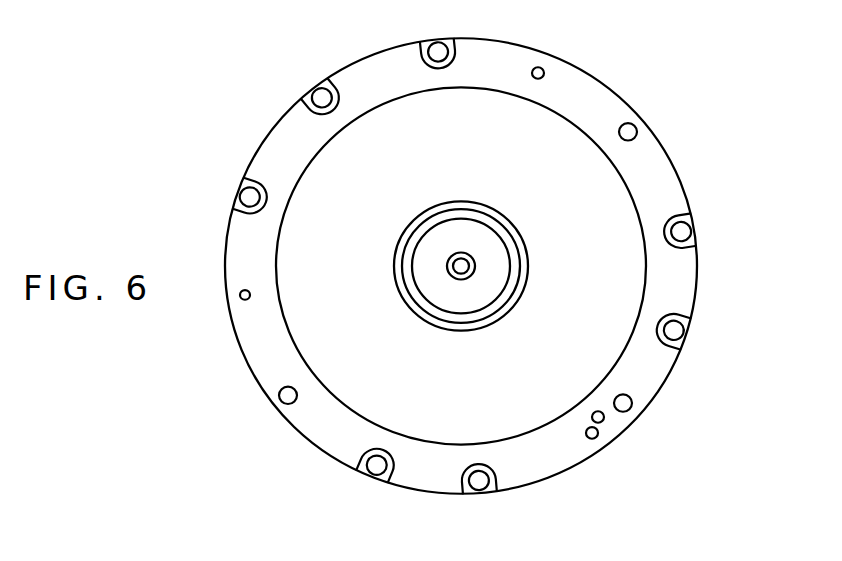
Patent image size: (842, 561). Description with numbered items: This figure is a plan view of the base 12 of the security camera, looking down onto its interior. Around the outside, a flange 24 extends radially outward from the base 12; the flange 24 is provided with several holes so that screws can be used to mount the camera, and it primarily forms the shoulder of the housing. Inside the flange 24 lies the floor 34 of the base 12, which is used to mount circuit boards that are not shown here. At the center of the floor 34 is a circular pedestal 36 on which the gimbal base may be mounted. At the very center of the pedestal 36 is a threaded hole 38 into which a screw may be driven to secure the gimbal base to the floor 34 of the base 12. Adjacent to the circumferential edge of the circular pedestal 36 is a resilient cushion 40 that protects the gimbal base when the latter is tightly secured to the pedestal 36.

The base 12 is at (175, 183).
The flange 24 is at (474, 266).
The floor 34 is at (461, 265).
The circular pedestal 36 is at (352, 292).
The threaded hole 38 is at (582, 338).
The resilient cushion 40 is at (571, 240).